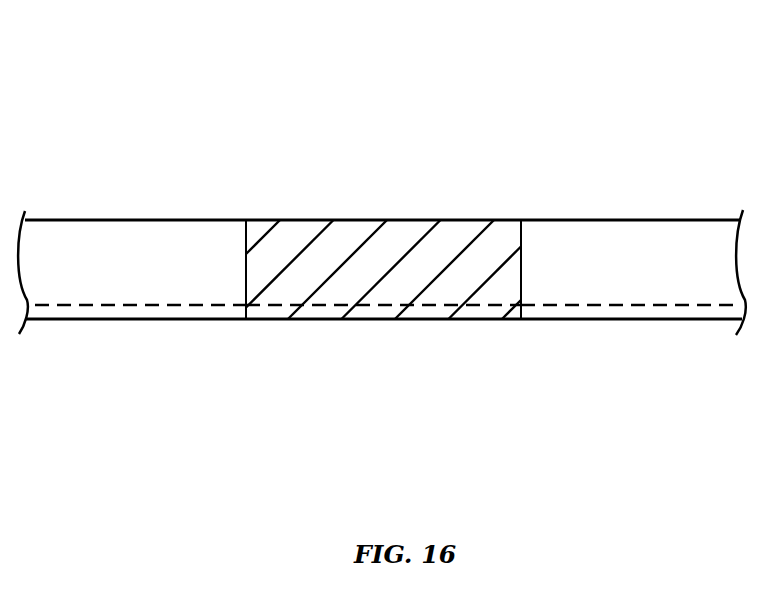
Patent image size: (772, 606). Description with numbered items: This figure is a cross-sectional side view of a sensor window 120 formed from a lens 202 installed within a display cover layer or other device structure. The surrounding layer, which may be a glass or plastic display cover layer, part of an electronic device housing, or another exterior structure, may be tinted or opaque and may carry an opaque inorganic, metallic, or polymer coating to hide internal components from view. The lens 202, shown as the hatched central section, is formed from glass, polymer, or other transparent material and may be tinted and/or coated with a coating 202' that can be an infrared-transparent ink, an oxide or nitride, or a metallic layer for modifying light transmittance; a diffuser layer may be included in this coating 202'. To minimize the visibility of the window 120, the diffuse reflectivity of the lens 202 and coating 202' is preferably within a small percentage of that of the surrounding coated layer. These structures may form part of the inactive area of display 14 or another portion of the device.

The display 14 is at (648, 84).
The sensor window 120 is at (279, 368).
The lens 202 is at (383, 239).
The coating 202' is at (383, 344).